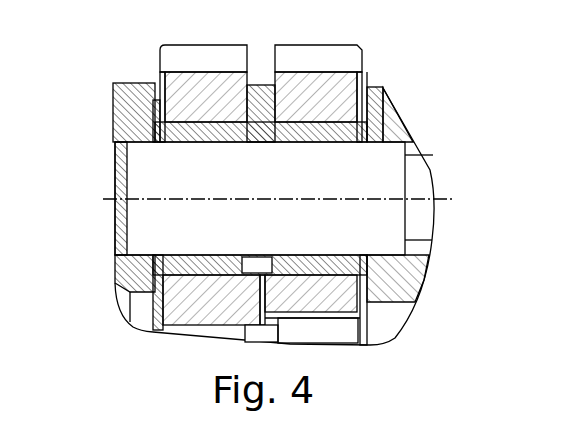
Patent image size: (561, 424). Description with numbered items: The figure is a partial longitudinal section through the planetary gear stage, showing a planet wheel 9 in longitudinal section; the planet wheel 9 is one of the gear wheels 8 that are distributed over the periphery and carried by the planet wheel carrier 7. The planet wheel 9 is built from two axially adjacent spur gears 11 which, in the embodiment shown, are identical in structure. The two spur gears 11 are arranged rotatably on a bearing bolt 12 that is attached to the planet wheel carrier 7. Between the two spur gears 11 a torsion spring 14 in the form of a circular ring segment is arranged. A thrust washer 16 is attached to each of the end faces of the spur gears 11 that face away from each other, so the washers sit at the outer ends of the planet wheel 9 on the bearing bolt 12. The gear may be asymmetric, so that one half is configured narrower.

The planet wheel carrier 7 is at (413, 220).
The gear wheel 8 is at (327, 330).
The planet wheel 9 is at (337, 363).
The spur gear 11 is at (180, 93).
The bearing bolt 12 is at (120, 165).
The torsion spring 14 is at (259, 110).
The thrust washer 16 is at (370, 267).